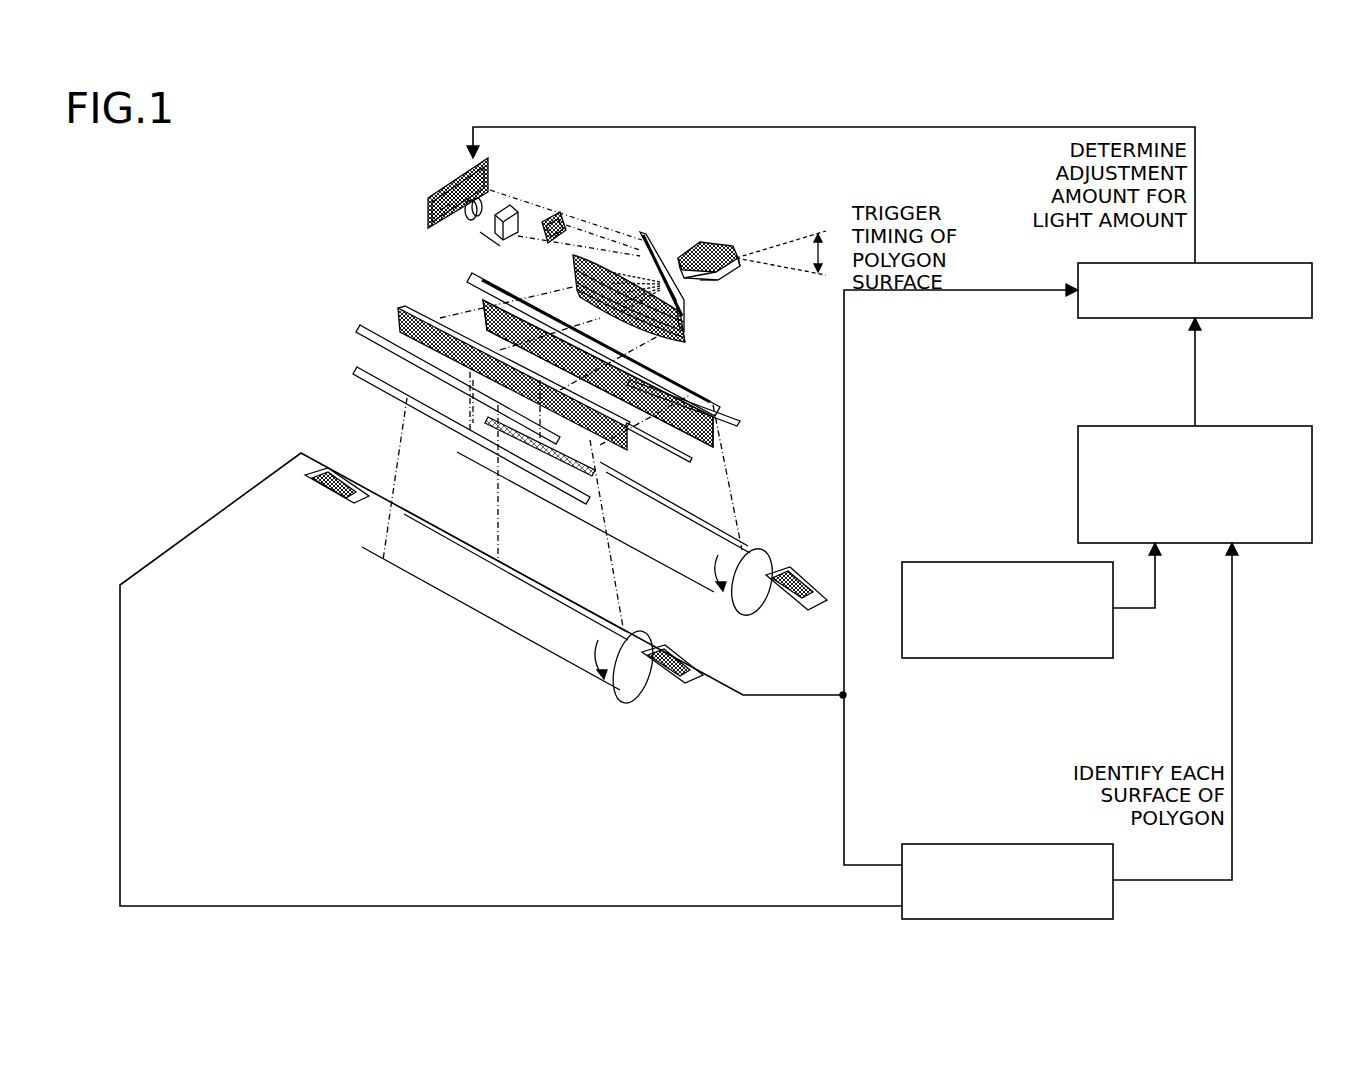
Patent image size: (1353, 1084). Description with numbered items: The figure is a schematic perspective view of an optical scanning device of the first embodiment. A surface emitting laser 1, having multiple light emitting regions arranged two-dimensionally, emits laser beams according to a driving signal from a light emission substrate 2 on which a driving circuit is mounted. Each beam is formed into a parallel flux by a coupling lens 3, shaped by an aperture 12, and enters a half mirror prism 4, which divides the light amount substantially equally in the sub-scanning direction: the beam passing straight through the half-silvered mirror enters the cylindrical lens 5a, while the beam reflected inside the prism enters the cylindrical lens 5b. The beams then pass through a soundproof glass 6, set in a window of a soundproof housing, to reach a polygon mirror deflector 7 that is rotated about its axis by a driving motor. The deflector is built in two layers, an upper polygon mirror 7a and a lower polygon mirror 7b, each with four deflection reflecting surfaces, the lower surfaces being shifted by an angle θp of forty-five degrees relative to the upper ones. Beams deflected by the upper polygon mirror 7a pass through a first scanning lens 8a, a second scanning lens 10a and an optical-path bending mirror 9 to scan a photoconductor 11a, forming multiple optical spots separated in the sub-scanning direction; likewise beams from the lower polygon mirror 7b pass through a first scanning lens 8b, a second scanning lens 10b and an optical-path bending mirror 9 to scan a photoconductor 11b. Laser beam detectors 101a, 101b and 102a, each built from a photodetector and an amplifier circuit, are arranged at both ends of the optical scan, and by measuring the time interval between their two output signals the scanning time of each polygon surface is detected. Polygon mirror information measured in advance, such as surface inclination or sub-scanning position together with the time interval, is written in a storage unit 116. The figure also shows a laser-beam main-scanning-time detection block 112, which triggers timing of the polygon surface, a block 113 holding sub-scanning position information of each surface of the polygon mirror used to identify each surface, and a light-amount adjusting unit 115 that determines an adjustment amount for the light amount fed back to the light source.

The surface emitting laser 1 is at (432, 194).
The light emission substrate 2 is at (451, 175).
The coupling lens 3 is at (482, 210).
The half mirror prism 4 is at (512, 206).
The cylindrical lens 5a is at (560, 212).
The cylindrical lens 5b is at (567, 232).
The soundproof glass 6 is at (648, 236).
The polygon mirror deflector 7 is at (722, 222).
The upper polygon mirror 7a is at (742, 272).
The lower polygon mirror 7b is at (714, 284).
The first scanning lens 8a is at (690, 324).
The first scanning lens 8b is at (666, 350).
The optical-path bending mirror 9 is at (506, 285).
The second scanning lens 10a is at (396, 310).
The second scanning lens 10b is at (480, 302).
The photoconductor 11a is at (534, 651).
The photoconductor 11b is at (672, 580).
The aperture 12 is at (492, 235).
The laser beam detector 101a is at (658, 712).
The laser beam detector 101b is at (797, 612).
The laser beam detector 102a is at (310, 486).
The laser-beam main-scanning-time detection unit 112 is at (928, 844).
The sub-scanning position information of each surface of polygon mirror 113 is at (1106, 426).
The light-amount adjusting unit 115 is at (1106, 265).
The storage unit 116 is at (924, 564).